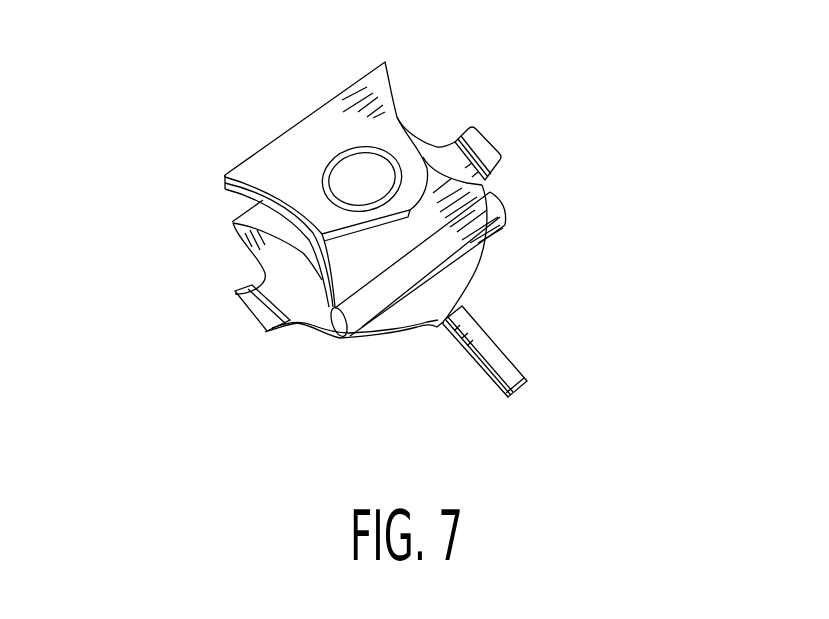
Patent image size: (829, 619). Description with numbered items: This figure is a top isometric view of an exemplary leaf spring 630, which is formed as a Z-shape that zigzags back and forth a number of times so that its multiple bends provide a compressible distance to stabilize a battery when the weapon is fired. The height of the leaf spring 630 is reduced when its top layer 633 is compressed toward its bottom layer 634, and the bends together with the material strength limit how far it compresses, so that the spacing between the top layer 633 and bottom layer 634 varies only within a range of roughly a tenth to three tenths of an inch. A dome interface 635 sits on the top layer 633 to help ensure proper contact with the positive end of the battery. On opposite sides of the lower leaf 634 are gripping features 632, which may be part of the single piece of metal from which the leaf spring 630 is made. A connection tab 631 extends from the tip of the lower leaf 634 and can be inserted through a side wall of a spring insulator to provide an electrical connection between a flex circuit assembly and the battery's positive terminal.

The leaf spring 630 is at (364, 261).
The connection tab 631 is at (474, 360).
The gripping feature 632 is at (485, 133).
The top layer 633 is at (343, 220).
The bottom layer 634 is at (480, 268).
The dome interface 635 is at (373, 168).